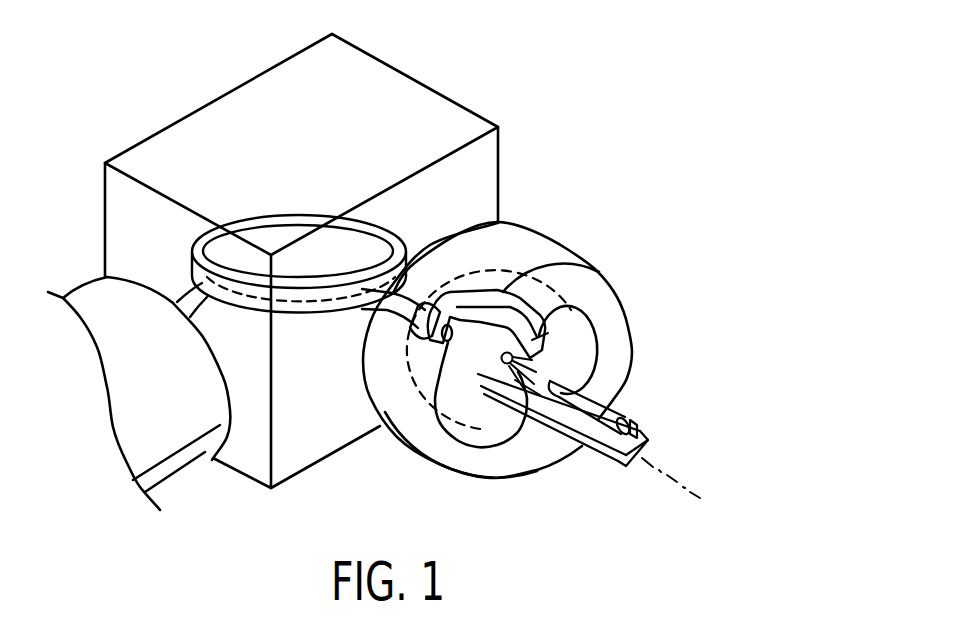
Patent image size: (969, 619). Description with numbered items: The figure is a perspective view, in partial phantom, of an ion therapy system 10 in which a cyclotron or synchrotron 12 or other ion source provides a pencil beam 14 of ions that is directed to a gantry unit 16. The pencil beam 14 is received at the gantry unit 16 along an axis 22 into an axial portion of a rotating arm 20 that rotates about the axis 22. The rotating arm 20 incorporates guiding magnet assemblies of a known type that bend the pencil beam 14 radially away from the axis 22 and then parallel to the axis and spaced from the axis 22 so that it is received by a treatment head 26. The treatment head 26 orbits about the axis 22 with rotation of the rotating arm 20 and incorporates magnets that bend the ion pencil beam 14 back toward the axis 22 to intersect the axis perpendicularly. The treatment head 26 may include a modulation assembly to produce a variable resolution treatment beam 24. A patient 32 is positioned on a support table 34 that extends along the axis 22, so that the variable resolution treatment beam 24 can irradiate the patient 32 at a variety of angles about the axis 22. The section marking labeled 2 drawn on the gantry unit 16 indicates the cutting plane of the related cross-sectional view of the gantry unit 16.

The ion therapy system 10 is at (506, 48).
The cyclotron or synchrotron 12 is at (280, 213).
The pencil beam 14 is at (305, 306).
The gantry unit 16 is at (658, 272).
The rotating arm 20 is at (486, 291).
The axis 22 is at (673, 473).
The variable resolution treatment beam 24 is at (508, 395).
The treatment head 26 is at (540, 338).
The patient 32 is at (612, 396).
The support table 34 is at (599, 448).
The section line 2- 2 is at (358, 408).